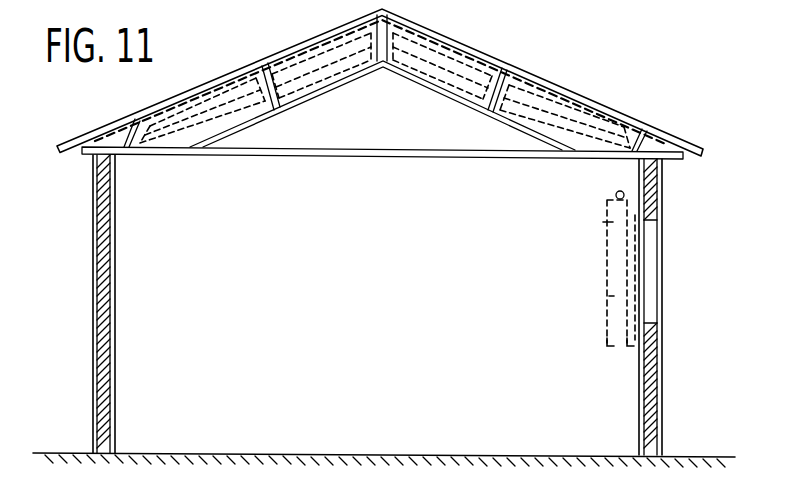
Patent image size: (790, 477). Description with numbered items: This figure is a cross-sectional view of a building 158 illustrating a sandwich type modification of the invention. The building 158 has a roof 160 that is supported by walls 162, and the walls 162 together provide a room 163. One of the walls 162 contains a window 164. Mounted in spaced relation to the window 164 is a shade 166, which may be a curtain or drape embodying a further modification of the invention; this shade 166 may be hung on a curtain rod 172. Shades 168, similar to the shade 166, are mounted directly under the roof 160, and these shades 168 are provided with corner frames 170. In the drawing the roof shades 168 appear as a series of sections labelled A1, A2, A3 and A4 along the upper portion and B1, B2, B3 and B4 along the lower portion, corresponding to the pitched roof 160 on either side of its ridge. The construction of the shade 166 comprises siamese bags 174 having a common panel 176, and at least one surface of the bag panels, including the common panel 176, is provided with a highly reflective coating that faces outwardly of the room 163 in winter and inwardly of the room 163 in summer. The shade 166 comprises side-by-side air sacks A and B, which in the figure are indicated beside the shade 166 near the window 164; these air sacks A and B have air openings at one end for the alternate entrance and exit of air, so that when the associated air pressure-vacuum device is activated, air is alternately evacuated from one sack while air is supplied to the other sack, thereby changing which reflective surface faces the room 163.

The building 158 is at (93, 268).
The roof 160 is at (214, 79).
The walls 162 is at (100, 400).
The room 163 is at (137, 333).
The window 164 is at (653, 265).
The shade 166 is at (608, 325).
The shades 168 is at (156, 112).
The corner frames 170 is at (336, 26).
The curtain rod 172 is at (623, 191).
The siamese bags 174 is at (630, 347).
The common panel 176 is at (627, 262).
The insulation panel section A1 is at (203, 89).
The insulation panel section A2 is at (298, 45).
The insulation panel section A3 is at (442, 52).
The insulation panel section A4 is at (577, 110).
The insulation panel section B1 is at (217, 122).
The insulation panel section B2 is at (320, 70).
The insulation panel section B3 is at (440, 78).
The insulation panel section B4 is at (525, 110).
The air sack A is at (628, 230).
The air sack B is at (613, 295).